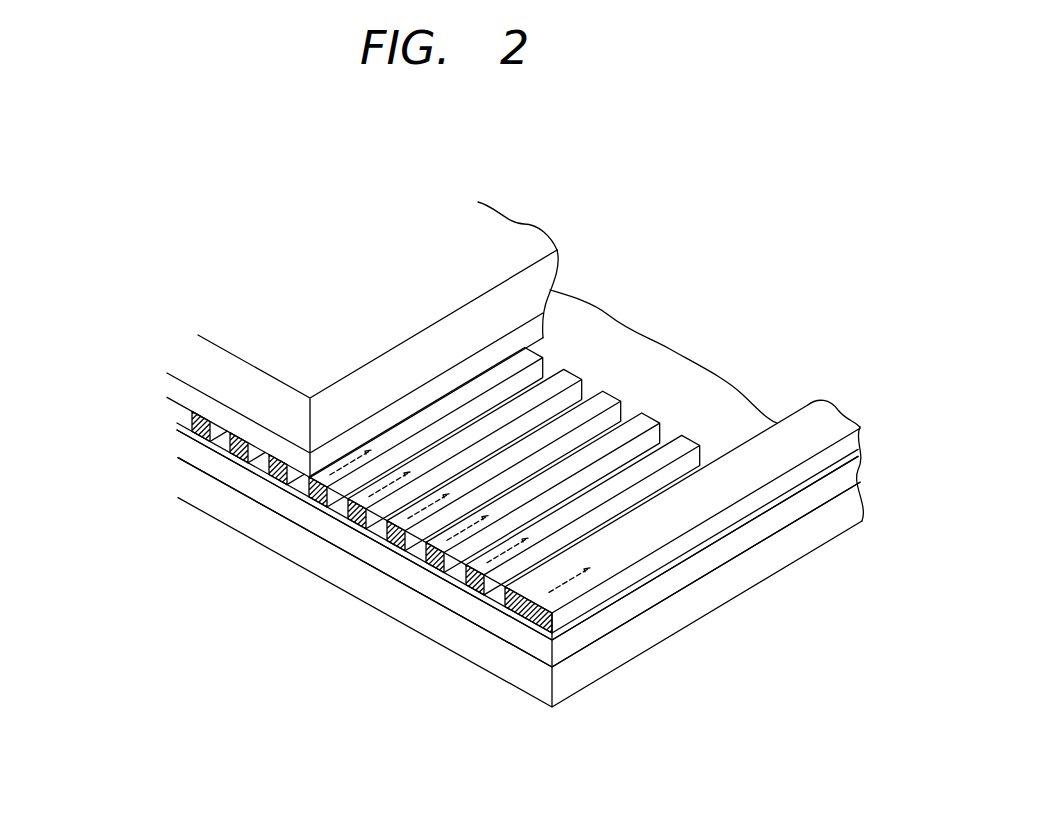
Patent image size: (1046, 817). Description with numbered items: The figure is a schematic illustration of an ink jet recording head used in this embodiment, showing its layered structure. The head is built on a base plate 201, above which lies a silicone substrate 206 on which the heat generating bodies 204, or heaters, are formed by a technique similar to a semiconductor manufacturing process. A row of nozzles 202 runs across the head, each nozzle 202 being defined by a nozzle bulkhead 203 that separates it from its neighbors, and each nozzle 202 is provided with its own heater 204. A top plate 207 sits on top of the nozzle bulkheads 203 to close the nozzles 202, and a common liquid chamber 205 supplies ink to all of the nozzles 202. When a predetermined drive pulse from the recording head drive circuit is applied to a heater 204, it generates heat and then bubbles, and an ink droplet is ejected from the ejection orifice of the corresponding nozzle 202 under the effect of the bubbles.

The base plate 201 is at (652, 634).
The nozzle 202 is at (214, 448).
The nozzle bulkhead 203 is at (648, 418).
The heat generating body 204 is at (404, 555).
The common liquid chamber 205 is at (590, 335).
The silicone substrate 206 is at (272, 477).
The top plate 207 is at (490, 211).